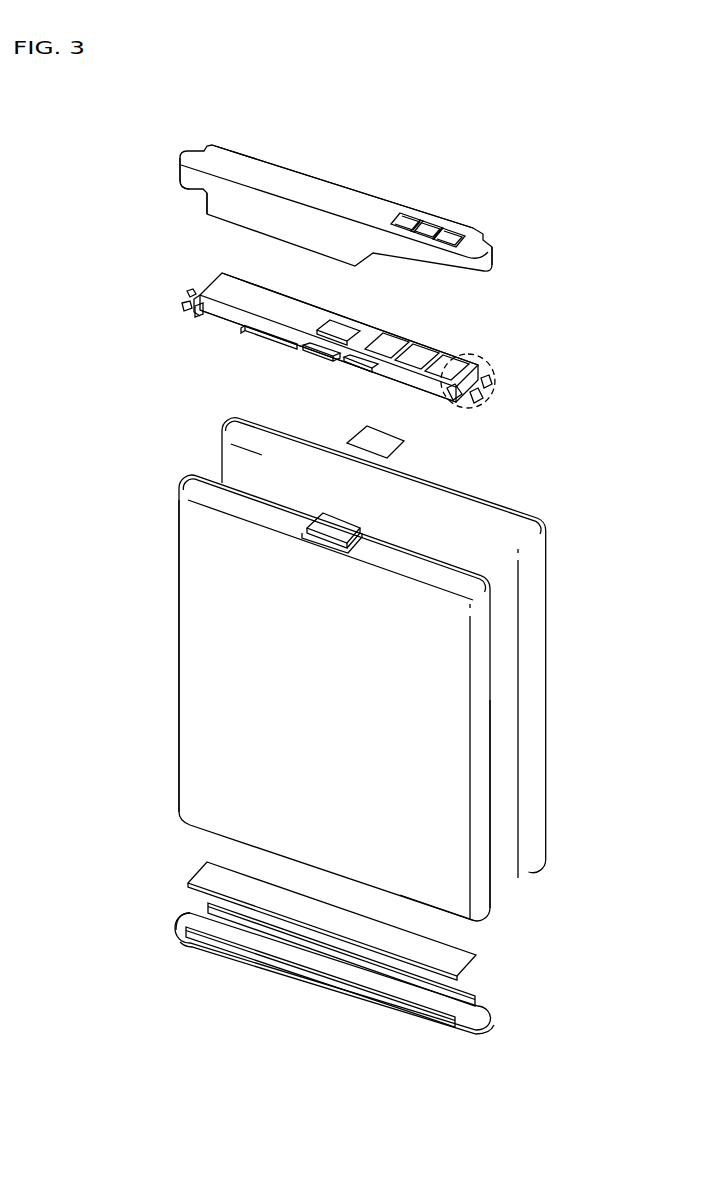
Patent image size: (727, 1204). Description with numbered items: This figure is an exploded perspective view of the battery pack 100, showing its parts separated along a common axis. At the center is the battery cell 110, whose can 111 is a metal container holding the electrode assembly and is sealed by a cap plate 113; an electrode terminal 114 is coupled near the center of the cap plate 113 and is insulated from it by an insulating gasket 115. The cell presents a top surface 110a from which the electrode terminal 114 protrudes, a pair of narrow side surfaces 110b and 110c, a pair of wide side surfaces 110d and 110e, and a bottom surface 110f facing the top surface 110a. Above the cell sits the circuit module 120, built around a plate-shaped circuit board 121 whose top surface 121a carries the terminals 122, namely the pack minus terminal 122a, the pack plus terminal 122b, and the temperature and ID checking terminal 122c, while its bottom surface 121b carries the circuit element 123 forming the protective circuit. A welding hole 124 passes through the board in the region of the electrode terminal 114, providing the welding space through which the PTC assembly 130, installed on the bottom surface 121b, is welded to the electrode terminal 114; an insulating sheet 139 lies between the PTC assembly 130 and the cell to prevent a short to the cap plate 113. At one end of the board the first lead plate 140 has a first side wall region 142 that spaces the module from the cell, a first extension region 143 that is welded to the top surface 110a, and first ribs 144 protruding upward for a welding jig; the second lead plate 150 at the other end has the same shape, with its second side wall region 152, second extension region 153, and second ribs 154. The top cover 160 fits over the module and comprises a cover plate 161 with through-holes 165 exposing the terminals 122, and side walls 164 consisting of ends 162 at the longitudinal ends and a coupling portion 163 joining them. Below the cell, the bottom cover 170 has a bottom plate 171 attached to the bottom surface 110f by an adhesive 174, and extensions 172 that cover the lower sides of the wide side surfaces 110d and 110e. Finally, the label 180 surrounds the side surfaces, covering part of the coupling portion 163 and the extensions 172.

The battery pack 100 is at (553, 137).
The battery cell 110 is at (354, 698).
The top surface 110a is at (264, 515).
The narrow side surface 110b is at (178, 634).
The narrow side surface 110c is at (478, 752).
The wide side surface 110d is at (223, 732).
The wide side surface 110e is at (490, 886).
The bottom surface 110f is at (470, 915).
The can 111 is at (200, 779).
The cap plate 113 is at (215, 512).
The electrode terminal 114 is at (342, 530).
The insulating gasket 115 is at (306, 540).
The circuit module 120 is at (333, 339).
The circuit board 121 is at (222, 274).
The top surface of circuit board 121a is at (273, 296).
The bottom surface of circuit board 121b is at (232, 322).
The terminals 122 is at (434, 327).
The pack minus terminal 122a is at (393, 341).
The pack plus terminal 122b is at (464, 350).
The temperature and ID checking terminal 122c is at (422, 350).
The circuit element 123 is at (285, 341).
The welding hole 124 is at (341, 327).
The PTC assembly 130 is at (341, 362).
The insulating sheet 139 is at (393, 450).
The first lead plate 140 is at (475, 396).
The first side wall region 142 is at (448, 392).
The first extension region 143 is at (472, 402).
The first ribs 144 is at (492, 388).
The second lead plate 150 is at (159, 307).
The second side wall region 152 is at (195, 317).
The second extension region 153 is at (187, 291).
The second ribs 154 is at (184, 309).
The top cover 160 is at (474, 222).
The cover plate 161 is at (287, 178).
The ends 162 is at (182, 162).
The coupling portion 163 is at (190, 178).
The side walls 164 is at (207, 212).
The through-holes 165 is at (452, 240).
The bottom cover 170 is at (329, 960).
The bottom plate 171 is at (186, 916).
The extensions 172 is at (264, 928).
The adhesive 174 is at (462, 962).
The label 180 is at (546, 634).